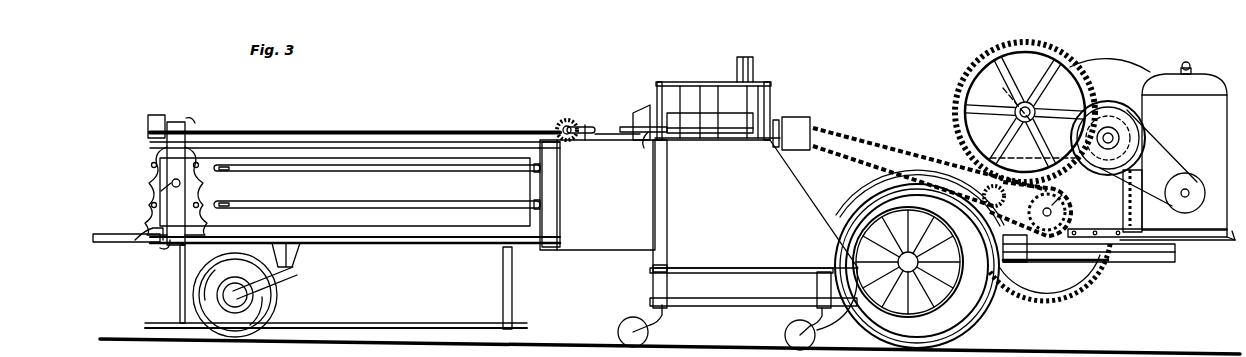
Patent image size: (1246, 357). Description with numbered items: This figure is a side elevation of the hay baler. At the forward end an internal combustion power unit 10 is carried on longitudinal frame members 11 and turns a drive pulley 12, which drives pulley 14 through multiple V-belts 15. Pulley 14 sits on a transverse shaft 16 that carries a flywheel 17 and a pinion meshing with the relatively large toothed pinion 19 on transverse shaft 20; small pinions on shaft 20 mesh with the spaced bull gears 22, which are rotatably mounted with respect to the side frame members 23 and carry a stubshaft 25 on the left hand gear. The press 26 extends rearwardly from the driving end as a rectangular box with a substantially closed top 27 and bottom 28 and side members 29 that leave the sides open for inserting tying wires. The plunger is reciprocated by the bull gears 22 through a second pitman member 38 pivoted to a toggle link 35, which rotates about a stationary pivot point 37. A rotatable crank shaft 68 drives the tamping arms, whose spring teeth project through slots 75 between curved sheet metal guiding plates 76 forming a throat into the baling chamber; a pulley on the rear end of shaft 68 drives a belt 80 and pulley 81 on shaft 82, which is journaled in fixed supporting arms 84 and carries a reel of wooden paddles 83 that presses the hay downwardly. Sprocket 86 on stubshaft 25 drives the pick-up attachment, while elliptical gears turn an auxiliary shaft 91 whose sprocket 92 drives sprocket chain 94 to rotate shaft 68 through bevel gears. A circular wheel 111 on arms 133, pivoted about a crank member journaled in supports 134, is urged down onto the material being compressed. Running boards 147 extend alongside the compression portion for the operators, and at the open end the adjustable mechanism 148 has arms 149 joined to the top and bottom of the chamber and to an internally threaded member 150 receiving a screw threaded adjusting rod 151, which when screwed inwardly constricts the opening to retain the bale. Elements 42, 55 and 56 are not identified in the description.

The internal combustion power unit 10 is at (1220, 94).
The longitudinal frame members 11 is at (1206, 240).
The drive pulley 12 is at (1188, 210).
The pulley 14 is at (1138, 160).
The multiple V-belts 15 is at (1186, 170).
The transverse shaft 16 is at (1108, 138).
The flywheel 17 is at (1130, 88).
The large toothed pinion 19 is at (1070, 62).
The transverse shaft 20 is at (1018, 110).
The bull gears 22 is at (1070, 286).
The side frame members 23 is at (1104, 256).
The stubshaft 25 is at (1054, 206).
The press 26 is at (518, 138).
The top 27 is at (456, 140).
The bottom 28 is at (460, 246).
The side members 29 is at (460, 178).
The toggle link 35 is at (950, 278).
The stationary pivot point 37 is at (954, 276).
The second pitman member 38 is at (1025, 255).
The caster wheels 42 is at (646, 335).
The hopper 55 is at (652, 209).
The main body 56 is at (744, 232).
The crank shaft 68 is at (791, 133).
The slots 75 is at (696, 86).
The curved sheet metal guiding plates 76 is at (728, 86).
The belt 80 is at (646, 110).
The pulley 81 is at (636, 123).
The shaft 82 is at (648, 150).
The reel of wooden paddles 83 is at (738, 130).
The fixed supporting arms 84 is at (664, 122).
The sprocket 86 is at (1056, 204).
The auxiliary shaft 91 is at (983, 196).
The sprocket 92 is at (986, 191).
The sprocket chain 94 is at (914, 136).
The circular wheel 111 is at (567, 117).
The arms 133 is at (586, 123).
The supports 134 is at (592, 142).
The running boards 147 is at (409, 329).
The adjustable mechanism 148 is at (157, 182).
The arms 149 is at (192, 127).
The internally threaded member 150 is at (190, 187).
The screw threaded adjusting rod 151 is at (160, 191).